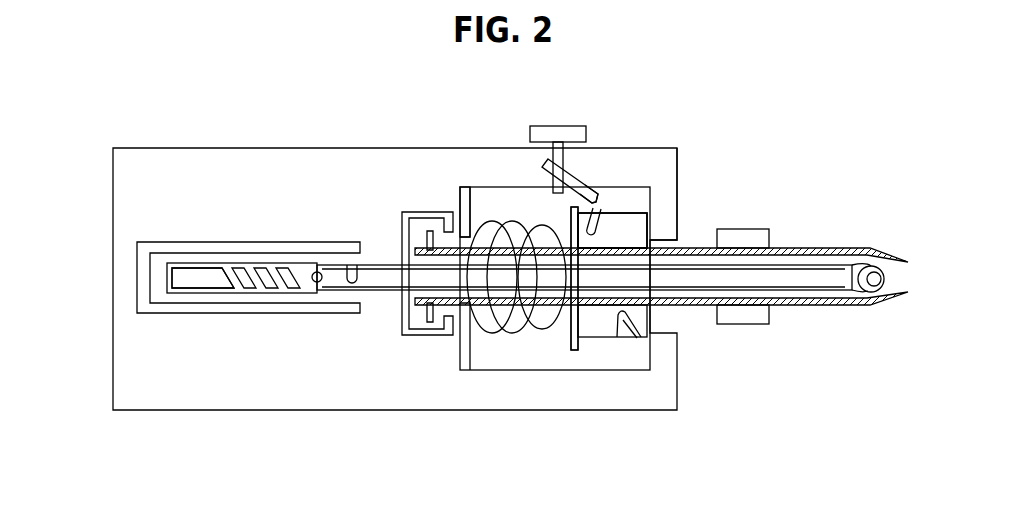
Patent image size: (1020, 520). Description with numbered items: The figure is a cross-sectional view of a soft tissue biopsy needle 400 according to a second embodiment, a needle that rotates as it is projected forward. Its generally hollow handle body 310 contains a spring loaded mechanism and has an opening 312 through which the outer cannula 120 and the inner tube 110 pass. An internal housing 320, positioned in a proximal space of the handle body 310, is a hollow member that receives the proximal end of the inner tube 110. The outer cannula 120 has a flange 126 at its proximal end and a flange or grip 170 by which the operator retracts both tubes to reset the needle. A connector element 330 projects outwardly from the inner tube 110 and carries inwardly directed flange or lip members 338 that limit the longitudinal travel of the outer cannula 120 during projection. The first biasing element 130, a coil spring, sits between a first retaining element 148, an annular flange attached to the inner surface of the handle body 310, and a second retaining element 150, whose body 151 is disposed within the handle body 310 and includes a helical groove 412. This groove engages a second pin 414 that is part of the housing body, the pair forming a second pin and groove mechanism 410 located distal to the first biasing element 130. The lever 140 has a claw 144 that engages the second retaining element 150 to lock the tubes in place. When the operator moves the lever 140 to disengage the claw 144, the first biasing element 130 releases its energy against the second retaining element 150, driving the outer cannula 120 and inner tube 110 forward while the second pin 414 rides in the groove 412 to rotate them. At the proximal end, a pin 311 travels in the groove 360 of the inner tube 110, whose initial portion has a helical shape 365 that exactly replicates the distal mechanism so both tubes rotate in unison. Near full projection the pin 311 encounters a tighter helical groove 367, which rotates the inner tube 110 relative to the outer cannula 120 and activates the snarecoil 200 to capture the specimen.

The inner tube 110 is at (377, 293).
The outer cannula 120 is at (460, 310).
The flange 126 is at (432, 322).
The first biasing element 130 is at (517, 332).
The lever 140 is at (548, 133).
The claw 144 is at (597, 192).
The first retaining element 148 is at (464, 226).
The second retaining element 150 is at (625, 204).
The body 151 is at (640, 237).
The grip 170 is at (747, 318).
The snarecoil 200 is at (868, 266).
The handle body 310 is at (334, 148).
The pin 311 is at (320, 283).
The opening 312 is at (677, 233).
The internal housing 320 is at (160, 241).
The connector element 330 is at (404, 212).
The flange 338 is at (448, 227).
The groove 360 is at (257, 267).
The helical shape 365 is at (350, 263).
The groove 367 is at (215, 267).
The soft tissue biopsy needle 400 is at (701, 115).
The second pin and groove mechanism 410 is at (277, 246).
The groove 412 is at (630, 338).
The second pin 414 is at (600, 210).